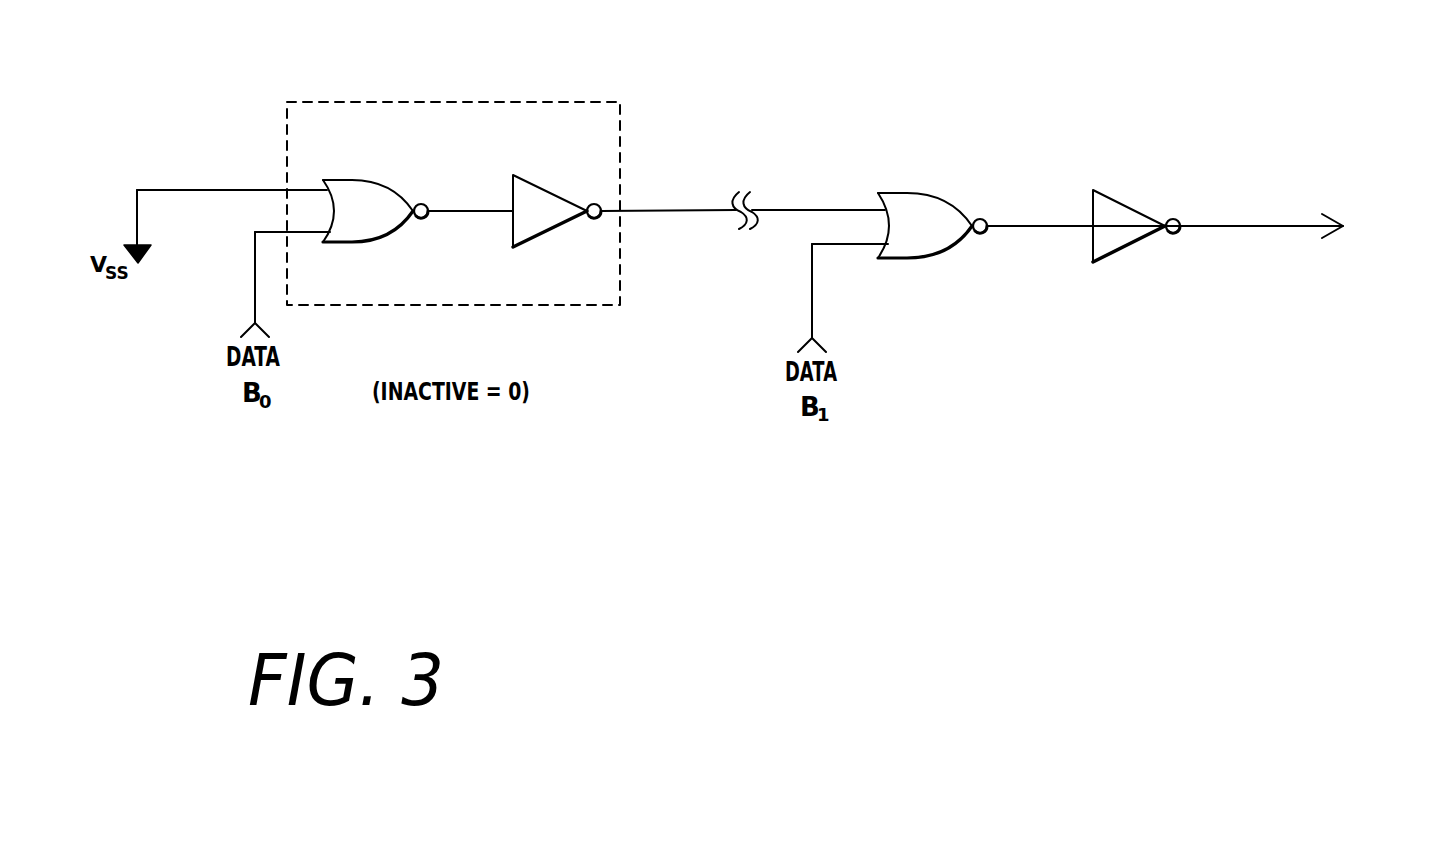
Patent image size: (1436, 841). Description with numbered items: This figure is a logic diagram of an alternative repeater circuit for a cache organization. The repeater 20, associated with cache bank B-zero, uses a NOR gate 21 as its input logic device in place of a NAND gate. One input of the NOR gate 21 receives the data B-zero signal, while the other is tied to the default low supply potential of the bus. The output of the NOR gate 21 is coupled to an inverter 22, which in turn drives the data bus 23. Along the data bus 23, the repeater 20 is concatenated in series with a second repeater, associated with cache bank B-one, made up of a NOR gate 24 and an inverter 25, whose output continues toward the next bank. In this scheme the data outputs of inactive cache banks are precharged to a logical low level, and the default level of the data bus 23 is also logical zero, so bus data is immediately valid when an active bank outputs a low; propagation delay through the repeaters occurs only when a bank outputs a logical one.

The repeater 20 is at (566, 101).
The NOR gate 21 is at (380, 226).
The inverter 22 is at (550, 226).
The data bus 23 is at (232, 188).
The NOR gate 24 is at (938, 241).
The inverter 25 is at (1131, 241).